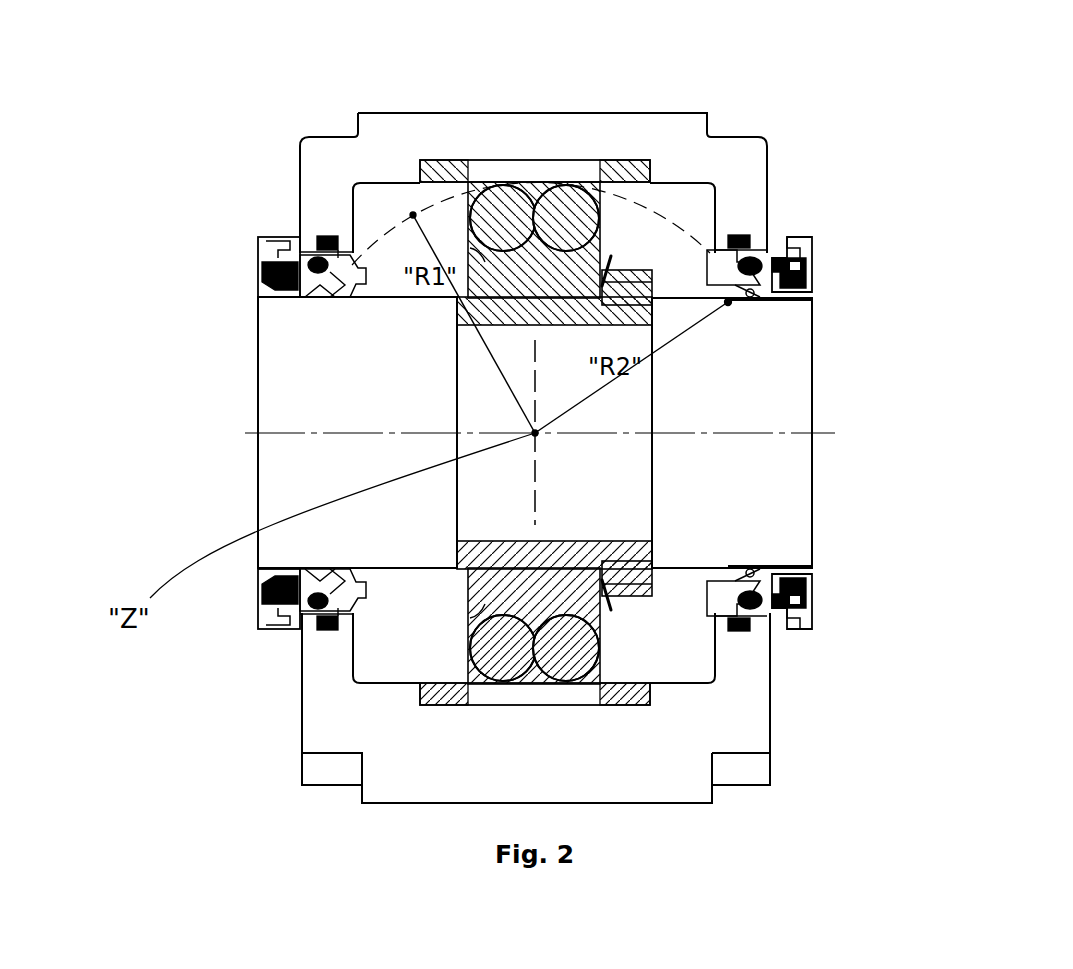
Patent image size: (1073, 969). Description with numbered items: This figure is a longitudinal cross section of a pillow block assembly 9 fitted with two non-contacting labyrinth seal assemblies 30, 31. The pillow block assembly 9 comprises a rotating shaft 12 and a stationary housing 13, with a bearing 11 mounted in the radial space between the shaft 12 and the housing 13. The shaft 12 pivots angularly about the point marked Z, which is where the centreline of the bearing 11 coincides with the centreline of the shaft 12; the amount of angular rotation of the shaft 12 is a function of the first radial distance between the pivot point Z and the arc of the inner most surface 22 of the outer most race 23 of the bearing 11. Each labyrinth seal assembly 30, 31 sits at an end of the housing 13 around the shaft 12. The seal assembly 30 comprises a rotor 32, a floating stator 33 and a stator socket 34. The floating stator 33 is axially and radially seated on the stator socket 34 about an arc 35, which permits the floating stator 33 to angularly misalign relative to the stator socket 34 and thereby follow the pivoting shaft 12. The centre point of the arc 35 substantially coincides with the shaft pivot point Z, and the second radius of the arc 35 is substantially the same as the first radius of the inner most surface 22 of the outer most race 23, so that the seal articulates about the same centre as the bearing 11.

The pillow block assembly 9 is at (790, 714).
The bearing 11 is at (582, 168).
The rotating shaft 12 is at (798, 520).
The stationary housing 13 is at (755, 662).
The inner most surface 22 is at (548, 182).
The outer most race 23 is at (485, 170).
The non-contacting labyrinth seal assembly 30 is at (840, 243).
The non-contacting labyrinth seal assembly 31 is at (238, 237).
The rotor 32 is at (808, 240).
The floating stator 33 is at (758, 300).
The stator socket 34 is at (717, 256).
The arc 35 is at (738, 302).